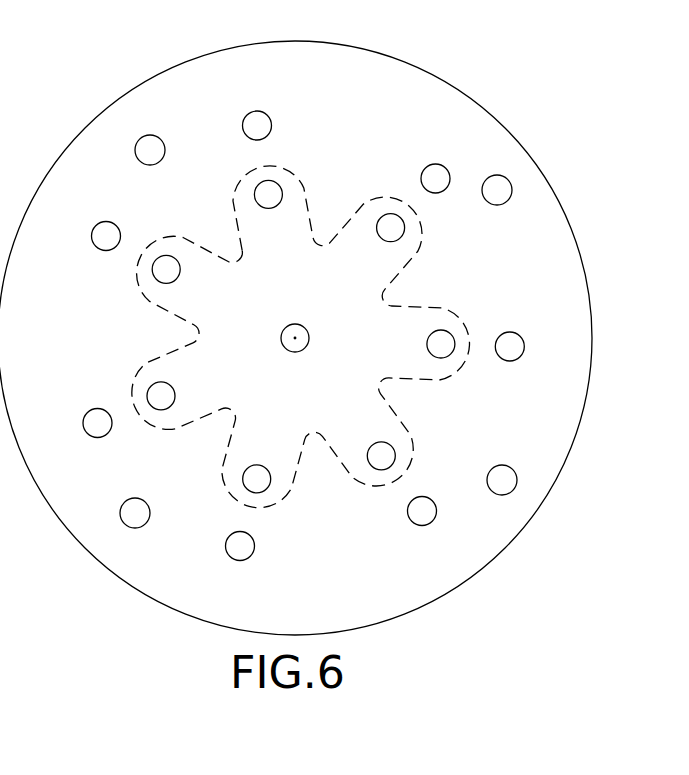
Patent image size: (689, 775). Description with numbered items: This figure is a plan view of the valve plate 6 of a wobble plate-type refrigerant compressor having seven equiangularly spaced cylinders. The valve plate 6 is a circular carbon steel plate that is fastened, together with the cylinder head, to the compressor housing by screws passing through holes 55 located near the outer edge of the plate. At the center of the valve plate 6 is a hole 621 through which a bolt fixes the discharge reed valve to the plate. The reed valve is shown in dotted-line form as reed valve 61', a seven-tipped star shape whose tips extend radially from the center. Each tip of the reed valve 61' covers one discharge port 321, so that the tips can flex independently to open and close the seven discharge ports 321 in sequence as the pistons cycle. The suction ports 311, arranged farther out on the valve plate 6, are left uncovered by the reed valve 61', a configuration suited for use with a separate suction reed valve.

The valve plate 6 is at (498, 120).
The holes 55 is at (138, 141).
The suction ports 311 is at (272, 124).
The discharge ports 321 is at (269, 209).
The reed valve 61' is at (301, 337).
The hole 621 is at (302, 351).